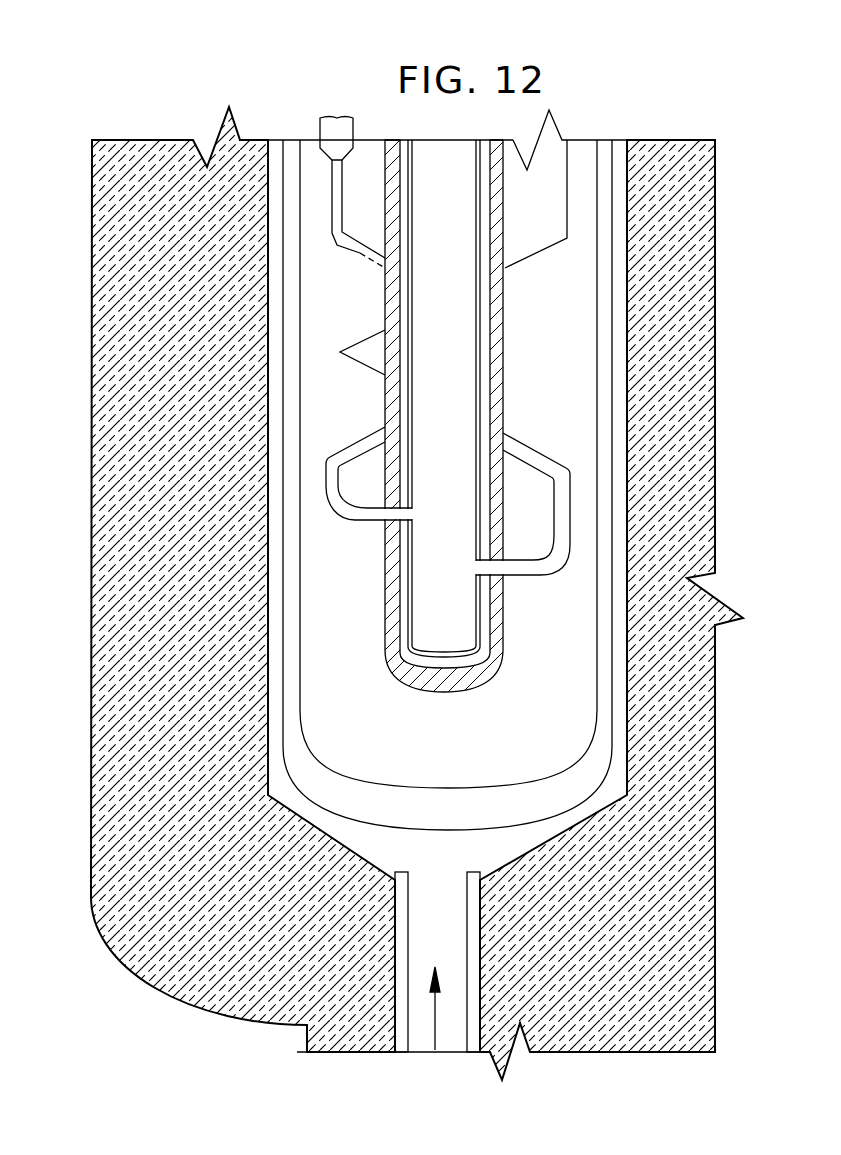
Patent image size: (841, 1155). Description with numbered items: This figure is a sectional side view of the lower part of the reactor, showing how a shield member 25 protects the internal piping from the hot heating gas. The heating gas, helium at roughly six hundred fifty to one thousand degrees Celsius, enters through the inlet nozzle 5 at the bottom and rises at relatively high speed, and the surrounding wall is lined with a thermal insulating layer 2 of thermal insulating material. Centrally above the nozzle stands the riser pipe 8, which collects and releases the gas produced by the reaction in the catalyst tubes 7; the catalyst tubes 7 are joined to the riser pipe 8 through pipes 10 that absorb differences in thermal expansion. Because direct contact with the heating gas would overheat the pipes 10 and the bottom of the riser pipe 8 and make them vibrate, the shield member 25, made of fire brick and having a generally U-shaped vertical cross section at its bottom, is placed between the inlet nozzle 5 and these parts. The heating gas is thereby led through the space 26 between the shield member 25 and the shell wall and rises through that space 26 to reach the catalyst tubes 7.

The thermal insulating layer 2 is at (115, 533).
The inlet nozzle 5 is at (452, 1017).
The catalyst tube 7 is at (341, 132).
The riser pipe 8 is at (428, 160).
The pipe 10 is at (333, 193).
The shield member 25 is at (603, 522).
The space 26 is at (622, 652).